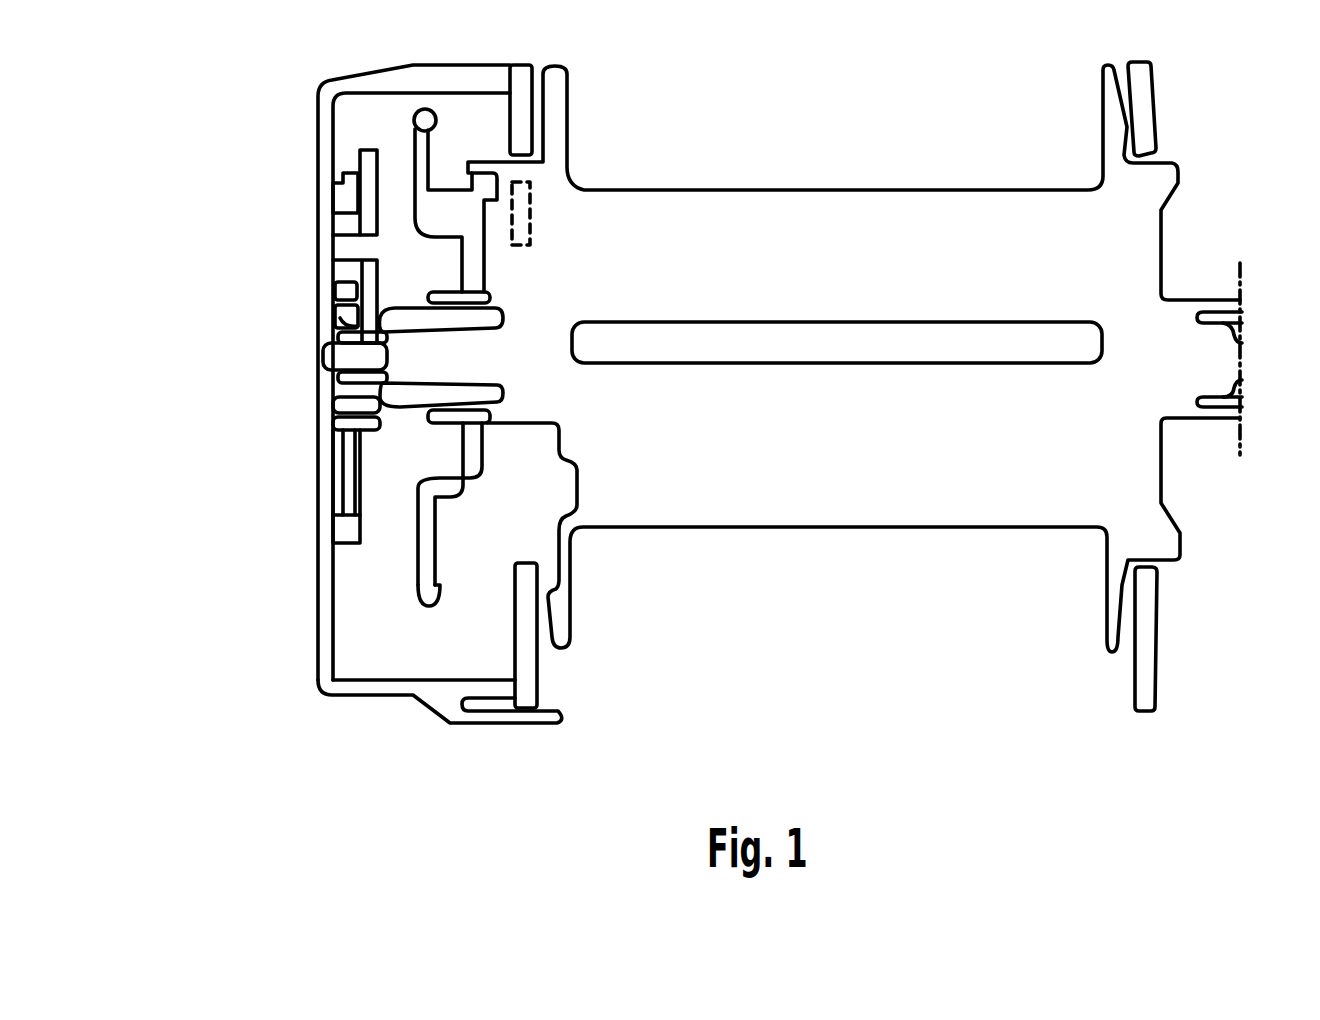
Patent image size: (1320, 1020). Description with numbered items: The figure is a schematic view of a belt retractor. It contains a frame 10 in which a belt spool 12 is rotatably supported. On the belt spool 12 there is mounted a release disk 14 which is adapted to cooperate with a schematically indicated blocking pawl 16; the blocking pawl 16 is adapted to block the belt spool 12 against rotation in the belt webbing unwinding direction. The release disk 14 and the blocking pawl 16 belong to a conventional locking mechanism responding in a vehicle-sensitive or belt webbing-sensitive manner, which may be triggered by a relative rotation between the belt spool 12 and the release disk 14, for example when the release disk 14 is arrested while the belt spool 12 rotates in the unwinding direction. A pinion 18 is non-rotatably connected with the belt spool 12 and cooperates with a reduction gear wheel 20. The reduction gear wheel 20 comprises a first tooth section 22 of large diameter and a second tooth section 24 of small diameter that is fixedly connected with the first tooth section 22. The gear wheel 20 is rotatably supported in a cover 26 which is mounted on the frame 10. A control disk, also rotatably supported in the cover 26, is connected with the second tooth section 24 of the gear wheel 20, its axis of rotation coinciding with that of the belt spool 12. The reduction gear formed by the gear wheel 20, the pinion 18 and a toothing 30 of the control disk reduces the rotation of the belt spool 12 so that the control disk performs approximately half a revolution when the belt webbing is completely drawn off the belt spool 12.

The frame 10 is at (525, 678).
The belt spool 12 is at (834, 217).
The release disk 14 is at (414, 128).
The blocking pawl 16 is at (527, 197).
The pinion 18 is at (345, 373).
The reduction gear wheel 20 is at (345, 278).
The first tooth section 22 is at (345, 320).
The second tooth section 24 is at (345, 220).
The cover 26 is at (318, 638).
The toothing 30 is at (345, 485).